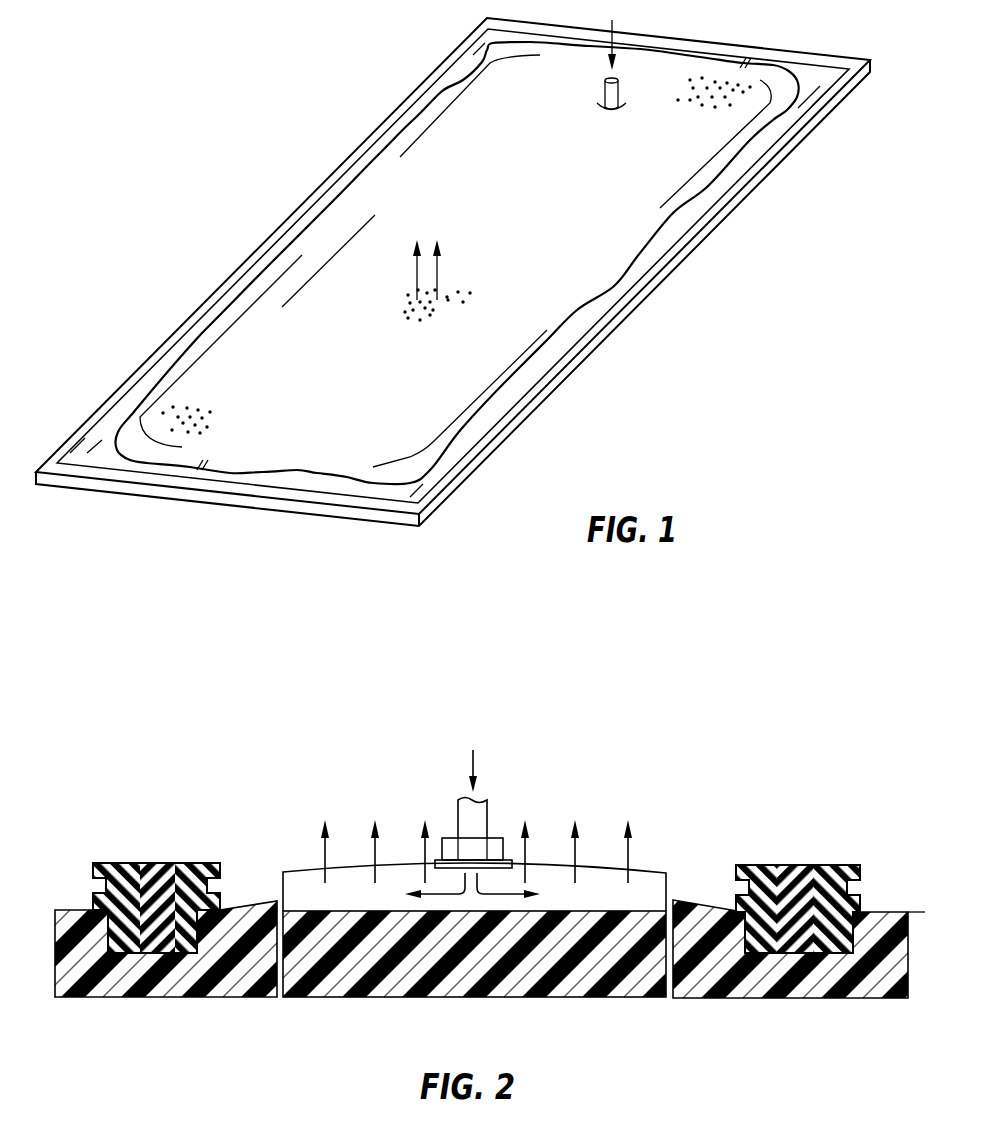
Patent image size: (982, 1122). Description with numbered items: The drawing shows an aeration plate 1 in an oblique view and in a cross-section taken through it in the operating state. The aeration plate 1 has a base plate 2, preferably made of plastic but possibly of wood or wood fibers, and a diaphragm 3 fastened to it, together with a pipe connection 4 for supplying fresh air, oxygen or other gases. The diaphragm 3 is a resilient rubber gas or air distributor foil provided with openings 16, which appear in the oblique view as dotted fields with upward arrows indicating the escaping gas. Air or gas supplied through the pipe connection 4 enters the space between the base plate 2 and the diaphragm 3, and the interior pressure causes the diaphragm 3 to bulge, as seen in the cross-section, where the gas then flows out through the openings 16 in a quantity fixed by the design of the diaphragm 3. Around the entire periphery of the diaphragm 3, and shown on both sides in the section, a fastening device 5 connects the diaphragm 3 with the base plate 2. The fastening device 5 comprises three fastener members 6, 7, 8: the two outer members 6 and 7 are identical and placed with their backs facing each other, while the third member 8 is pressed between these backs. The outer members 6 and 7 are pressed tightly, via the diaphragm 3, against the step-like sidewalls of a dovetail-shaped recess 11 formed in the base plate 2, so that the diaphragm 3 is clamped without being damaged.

In FIG. 1, the aeration plate 1 is at (242, 195).
In FIG. 2, the aeration plate 1 is at (856, 800).
In FIG. 1, the base plate 2 is at (653, 323).
In FIG. 2, the base plate 2 is at (310, 1012).
In FIG. 1, the diaphragm 3 is at (373, 190).
In FIG. 2, the diaphragm 3 is at (63, 908).
In FIG. 1, the pipe connection 4 is at (604, 88).
In FIG. 2, the pipe connection 4 is at (480, 812).
In FIG. 1, the fastening device 5 is at (313, 452).
In FIG. 2, the fastening device 5 is at (476, 896).
In FIG. 2, the outer fastener member 6 is at (120, 862).
In FIG. 2, the outer fastener member 7 is at (195, 862).
In FIG. 2, the third fastener member 8 is at (150, 862).
In FIG. 2, the dovetail-shaped recess 11 is at (120, 948).
In FIG. 1, the openings 16 is at (452, 290).
In FIG. 2, the openings 16 is at (322, 867).